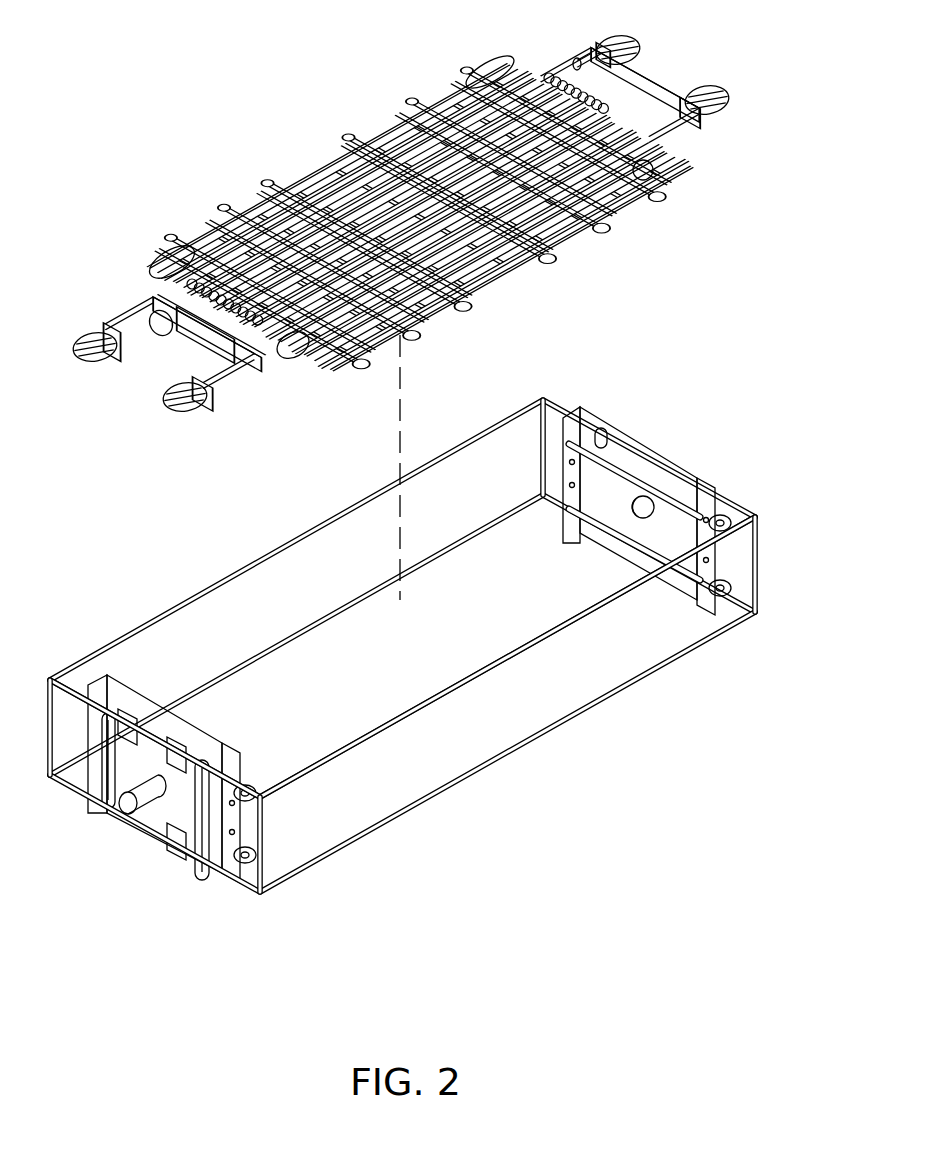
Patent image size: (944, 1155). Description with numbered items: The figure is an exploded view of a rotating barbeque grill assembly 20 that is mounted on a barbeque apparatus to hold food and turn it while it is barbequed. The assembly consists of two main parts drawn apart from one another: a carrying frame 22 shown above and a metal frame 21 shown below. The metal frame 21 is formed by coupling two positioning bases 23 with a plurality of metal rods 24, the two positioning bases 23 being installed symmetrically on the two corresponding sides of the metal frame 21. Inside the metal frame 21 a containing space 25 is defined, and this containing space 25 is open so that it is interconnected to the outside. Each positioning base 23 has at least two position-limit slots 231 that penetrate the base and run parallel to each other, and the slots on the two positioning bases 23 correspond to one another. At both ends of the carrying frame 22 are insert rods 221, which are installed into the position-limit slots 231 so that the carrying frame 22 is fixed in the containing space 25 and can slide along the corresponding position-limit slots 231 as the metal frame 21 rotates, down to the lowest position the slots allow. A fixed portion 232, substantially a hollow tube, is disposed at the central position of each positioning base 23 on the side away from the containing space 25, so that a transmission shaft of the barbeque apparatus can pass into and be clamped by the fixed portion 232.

The rotating barbeque grill assembly 20 is at (400, 469).
The metal frame 21 is at (383, 626).
The carrying frame 22 is at (401, 223).
The insert rod 221 is at (618, 36).
The positioning base 23 is at (371, 633).
The position-limit slot 231 is at (598, 428).
The fixed portion 232 is at (98, 828).
The metal rod 24 is at (402, 598).
The containing space 25 is at (320, 715).